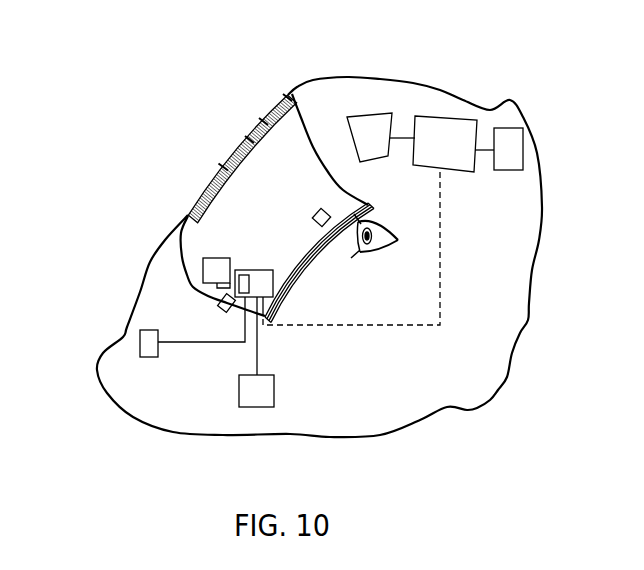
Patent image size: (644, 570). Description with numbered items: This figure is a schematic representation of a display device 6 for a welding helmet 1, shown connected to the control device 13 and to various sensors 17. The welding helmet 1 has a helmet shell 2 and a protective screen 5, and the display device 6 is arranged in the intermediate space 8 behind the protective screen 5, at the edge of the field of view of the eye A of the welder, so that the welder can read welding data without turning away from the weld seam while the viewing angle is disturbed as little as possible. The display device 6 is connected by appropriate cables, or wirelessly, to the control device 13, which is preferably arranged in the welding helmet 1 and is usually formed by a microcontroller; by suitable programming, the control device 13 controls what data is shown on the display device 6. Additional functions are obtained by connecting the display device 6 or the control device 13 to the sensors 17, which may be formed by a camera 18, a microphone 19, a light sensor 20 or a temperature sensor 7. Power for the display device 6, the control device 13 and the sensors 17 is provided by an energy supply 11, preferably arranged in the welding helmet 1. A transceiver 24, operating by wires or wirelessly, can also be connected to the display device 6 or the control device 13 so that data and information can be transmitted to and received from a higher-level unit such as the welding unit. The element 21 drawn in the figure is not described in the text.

The welding helmet 1 is at (550, 71).
The helmet shell 2 is at (375, 98).
The protective screen 5 is at (218, 165).
The display device 6 is at (244, 293).
The temperature sensor 7 is at (213, 268).
The intermediate space 8 is at (316, 212).
The energy supply 11 is at (367, 127).
The control device 13 is at (453, 130).
The sensors 17 is at (90, 427).
The camera 18 is at (218, 303).
The microphone 19 is at (255, 393).
The light sensor 20 is at (247, 141).
The switch 21 is at (143, 345).
The transceiver 24 is at (515, 160).
The eye A is at (383, 212).